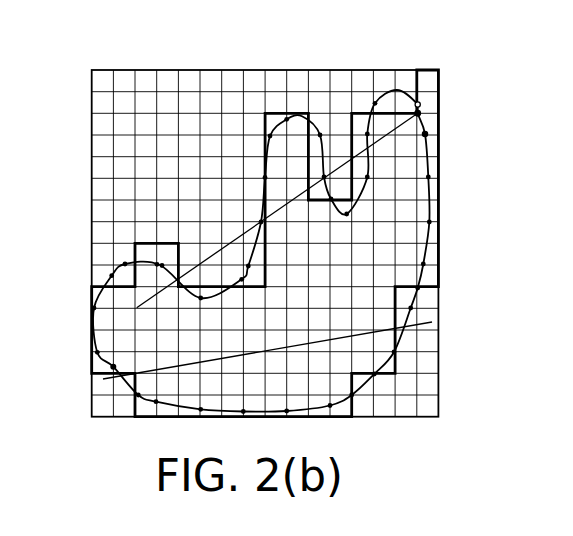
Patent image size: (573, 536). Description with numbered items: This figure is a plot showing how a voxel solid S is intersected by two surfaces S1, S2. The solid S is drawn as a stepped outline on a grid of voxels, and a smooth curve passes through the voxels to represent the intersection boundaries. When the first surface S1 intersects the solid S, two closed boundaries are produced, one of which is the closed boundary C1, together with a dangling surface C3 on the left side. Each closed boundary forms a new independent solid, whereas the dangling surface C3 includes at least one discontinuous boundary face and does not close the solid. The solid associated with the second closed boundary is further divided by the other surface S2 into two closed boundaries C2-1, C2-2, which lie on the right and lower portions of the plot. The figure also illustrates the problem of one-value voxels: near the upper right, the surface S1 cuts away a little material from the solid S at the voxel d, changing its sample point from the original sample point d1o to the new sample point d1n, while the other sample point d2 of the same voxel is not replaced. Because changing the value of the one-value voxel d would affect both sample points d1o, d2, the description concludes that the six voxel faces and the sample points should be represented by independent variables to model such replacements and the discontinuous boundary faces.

The closed boundary C1 is at (403, 91).
The closed boundary C2-1 is at (431, 235).
The closed boundary C2-2 is at (402, 336).
The dangling surface C3 is at (113, 275).
The solid S is at (427, 252).
The surface S1 is at (235, 238).
The surface S2 is at (338, 335).
The voxel d is at (416, 115).
The sample point d1o is at (421, 100).
The sample point d1n is at (421, 114).
The sample point d2 is at (428, 136).